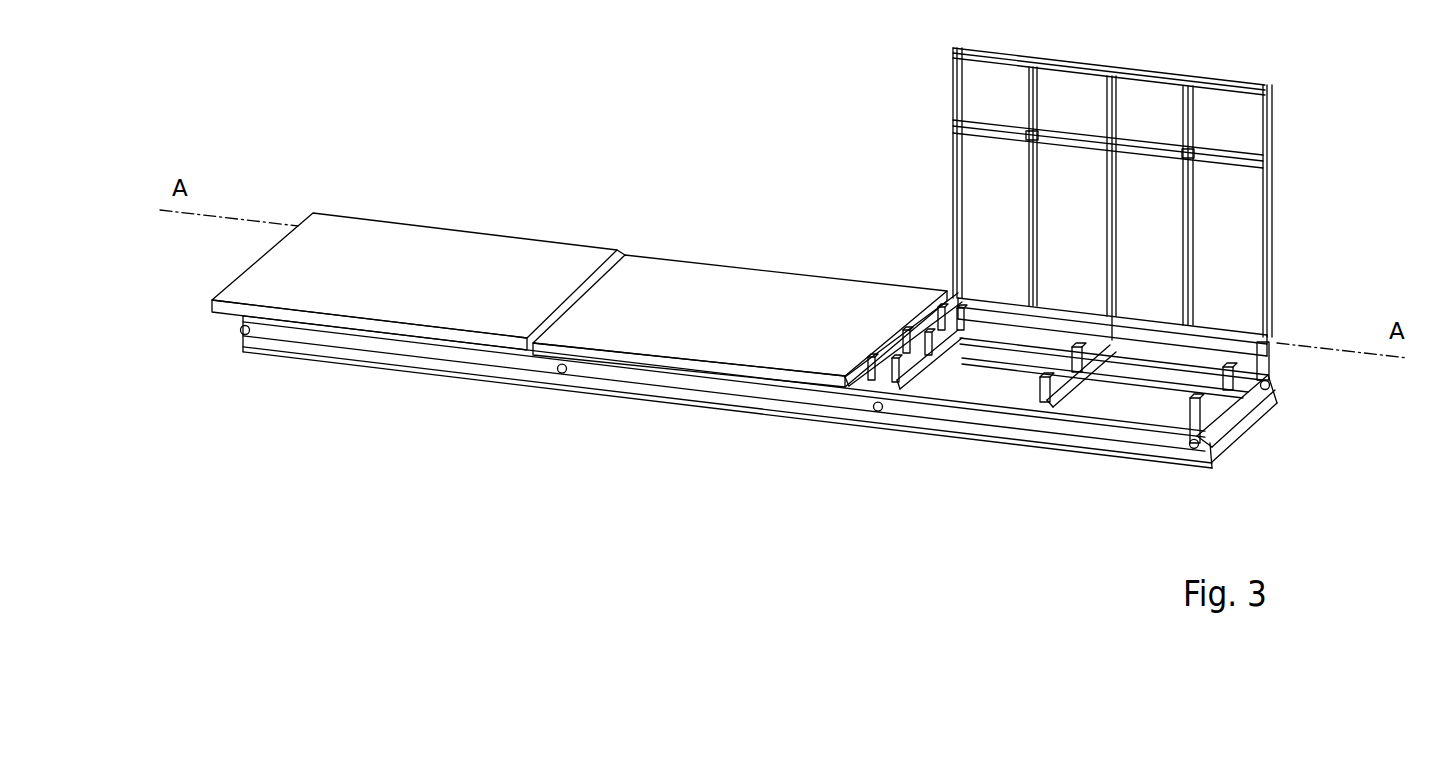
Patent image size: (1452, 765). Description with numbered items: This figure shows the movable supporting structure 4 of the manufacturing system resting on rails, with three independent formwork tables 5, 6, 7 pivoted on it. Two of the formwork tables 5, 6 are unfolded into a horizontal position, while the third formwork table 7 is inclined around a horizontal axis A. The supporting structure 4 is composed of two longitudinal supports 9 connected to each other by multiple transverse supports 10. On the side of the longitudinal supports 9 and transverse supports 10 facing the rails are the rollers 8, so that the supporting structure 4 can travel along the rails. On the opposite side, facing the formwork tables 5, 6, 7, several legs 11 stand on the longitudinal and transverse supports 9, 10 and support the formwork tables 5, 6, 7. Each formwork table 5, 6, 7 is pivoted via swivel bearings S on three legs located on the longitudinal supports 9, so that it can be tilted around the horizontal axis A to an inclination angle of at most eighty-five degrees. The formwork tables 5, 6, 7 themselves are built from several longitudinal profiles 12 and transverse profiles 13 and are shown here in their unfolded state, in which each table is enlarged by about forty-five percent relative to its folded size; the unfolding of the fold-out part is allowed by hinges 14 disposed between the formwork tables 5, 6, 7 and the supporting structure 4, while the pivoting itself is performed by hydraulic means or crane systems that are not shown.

The supporting structure 4 is at (1236, 416).
The formwork table 5 is at (395, 262).
The formwork table 6 is at (703, 288).
The formwork table 7 is at (1141, 176).
The rollers 8 is at (875, 410).
The longitudinal supports 9 is at (982, 403).
The transverse supports 10 is at (1063, 397).
The legs 11 is at (1045, 385).
The longitudinal profiles 12 is at (1271, 242).
The transverse profiles 13 is at (988, 133).
The hinges 14 is at (1191, 150).
The swivel bearings S is at (950, 296).